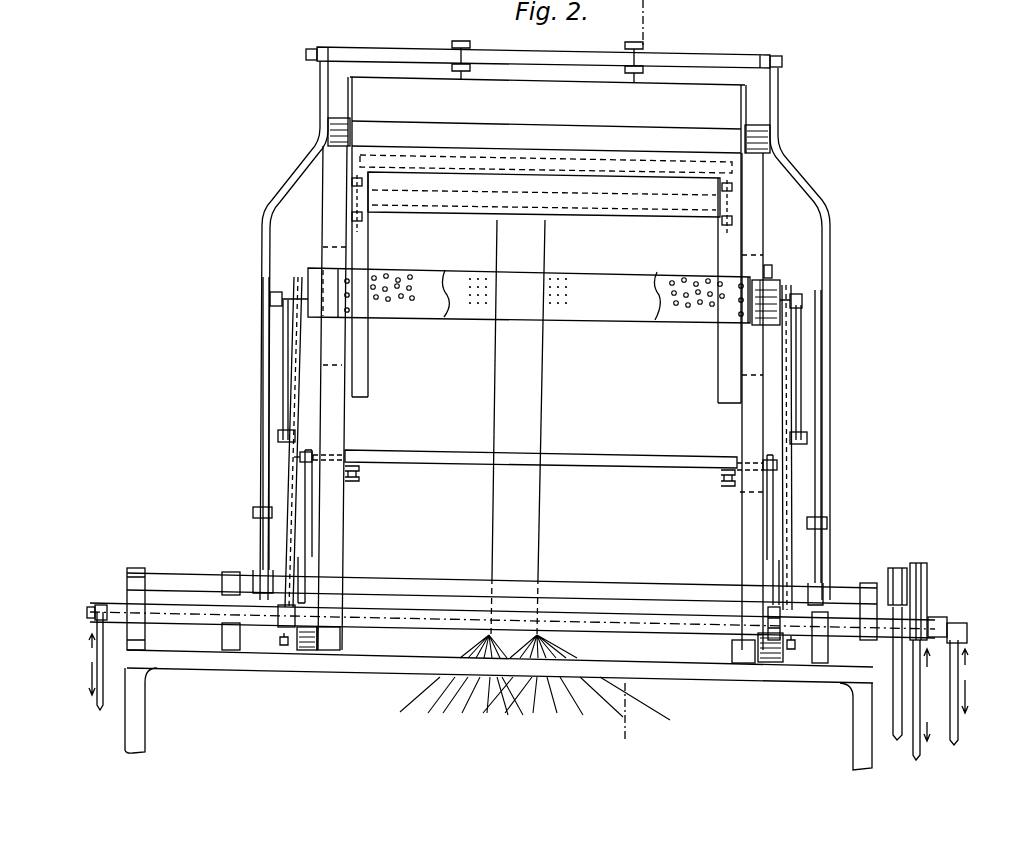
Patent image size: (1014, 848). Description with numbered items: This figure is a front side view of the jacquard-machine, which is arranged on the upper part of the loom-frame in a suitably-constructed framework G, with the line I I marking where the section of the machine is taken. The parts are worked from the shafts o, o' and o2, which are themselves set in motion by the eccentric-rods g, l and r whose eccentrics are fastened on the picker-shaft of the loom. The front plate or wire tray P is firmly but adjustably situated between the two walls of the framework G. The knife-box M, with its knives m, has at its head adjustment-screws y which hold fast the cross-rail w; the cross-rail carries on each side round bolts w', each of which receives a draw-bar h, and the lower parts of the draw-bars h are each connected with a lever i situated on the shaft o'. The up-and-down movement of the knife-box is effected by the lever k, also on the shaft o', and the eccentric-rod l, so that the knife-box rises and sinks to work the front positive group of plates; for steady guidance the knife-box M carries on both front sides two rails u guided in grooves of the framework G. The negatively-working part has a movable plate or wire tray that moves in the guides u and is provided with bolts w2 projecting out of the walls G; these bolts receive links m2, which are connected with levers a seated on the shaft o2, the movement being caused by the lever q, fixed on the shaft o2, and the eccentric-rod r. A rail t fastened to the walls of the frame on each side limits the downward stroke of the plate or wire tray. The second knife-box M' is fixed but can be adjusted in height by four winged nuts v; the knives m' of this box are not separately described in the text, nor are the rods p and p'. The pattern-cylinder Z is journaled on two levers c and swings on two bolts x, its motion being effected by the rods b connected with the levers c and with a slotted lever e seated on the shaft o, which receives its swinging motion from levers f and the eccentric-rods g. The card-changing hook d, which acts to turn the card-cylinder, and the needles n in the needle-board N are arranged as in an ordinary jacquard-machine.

The cross-rail w is at (543, 38).
The round bolts w' is at (547, 45).
The adjustment-screws y is at (472, 45).
The section line I is at (641, 371).
The draw-bar h is at (272, 179).
The framework G is at (330, 228).
The eccentric-rod l is at (884, 676).
The rails u is at (348, 421).
The knife-box M is at (546, 245).
The knives m is at (546, 133).
The second knife-box M' is at (544, 208).
The inner slide m' is at (544, 216).
The winged nuts v is at (352, 183).
The rod p is at (478, 427).
The rod p' is at (558, 427).
The needle-board N is at (529, 295).
The pattern-cylinder Z is at (438, 315).
The needles n is at (559, 299).
The card-changing hook d is at (772, 272).
The rods b is at (284, 342).
The levers c is at (342, 366).
The front plate or wire tray P is at (436, 460).
The rail t is at (318, 478).
The bolts w2 is at (300, 453).
The slotted lever e is at (296, 465).
The links m2 is at (312, 533).
The lever i is at (264, 540).
The shaft o' is at (502, 596).
The shaft o2 is at (388, 620).
The levers a is at (294, 621).
The levers f is at (126, 602).
The shaft o is at (529, 611).
The lever k is at (898, 568).
The lever q is at (928, 612).
The eccentric-rods g is at (985, 652).
The eccentric-rod r is at (930, 694).
The bolts x is at (279, 641).